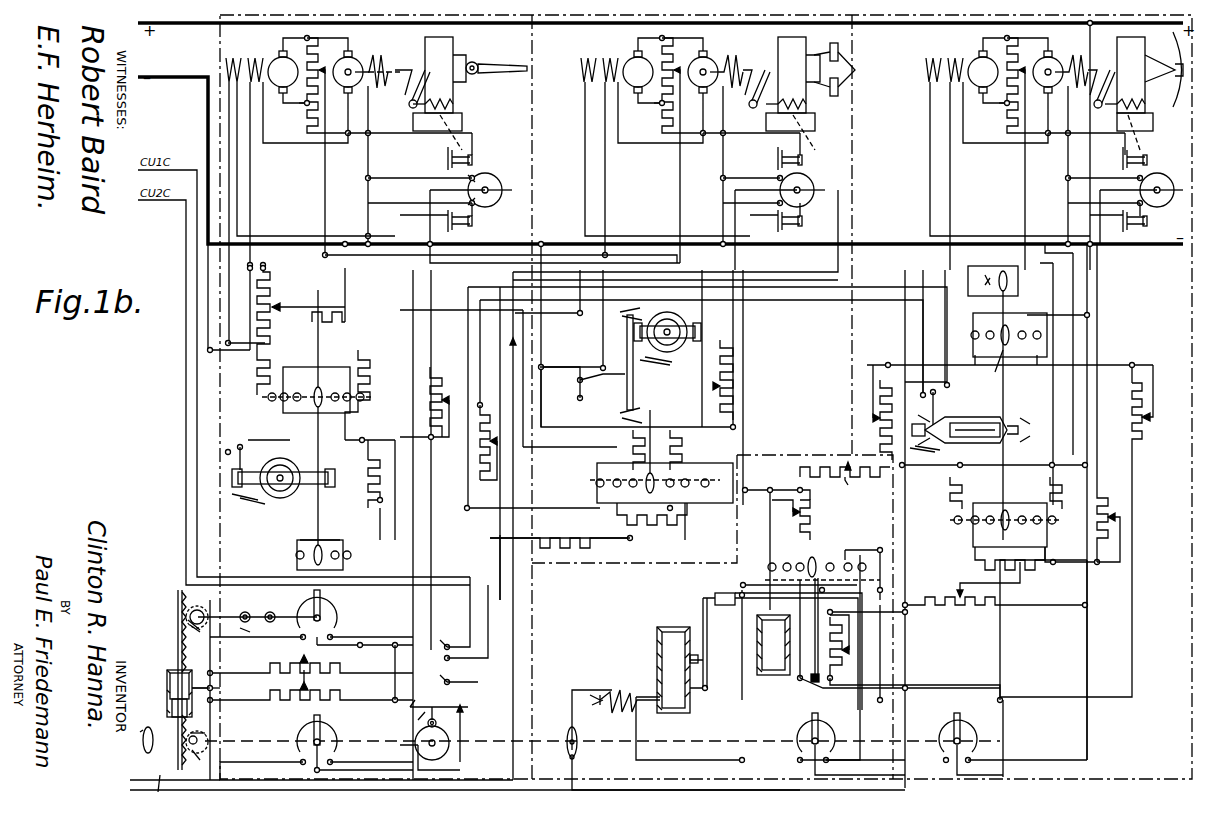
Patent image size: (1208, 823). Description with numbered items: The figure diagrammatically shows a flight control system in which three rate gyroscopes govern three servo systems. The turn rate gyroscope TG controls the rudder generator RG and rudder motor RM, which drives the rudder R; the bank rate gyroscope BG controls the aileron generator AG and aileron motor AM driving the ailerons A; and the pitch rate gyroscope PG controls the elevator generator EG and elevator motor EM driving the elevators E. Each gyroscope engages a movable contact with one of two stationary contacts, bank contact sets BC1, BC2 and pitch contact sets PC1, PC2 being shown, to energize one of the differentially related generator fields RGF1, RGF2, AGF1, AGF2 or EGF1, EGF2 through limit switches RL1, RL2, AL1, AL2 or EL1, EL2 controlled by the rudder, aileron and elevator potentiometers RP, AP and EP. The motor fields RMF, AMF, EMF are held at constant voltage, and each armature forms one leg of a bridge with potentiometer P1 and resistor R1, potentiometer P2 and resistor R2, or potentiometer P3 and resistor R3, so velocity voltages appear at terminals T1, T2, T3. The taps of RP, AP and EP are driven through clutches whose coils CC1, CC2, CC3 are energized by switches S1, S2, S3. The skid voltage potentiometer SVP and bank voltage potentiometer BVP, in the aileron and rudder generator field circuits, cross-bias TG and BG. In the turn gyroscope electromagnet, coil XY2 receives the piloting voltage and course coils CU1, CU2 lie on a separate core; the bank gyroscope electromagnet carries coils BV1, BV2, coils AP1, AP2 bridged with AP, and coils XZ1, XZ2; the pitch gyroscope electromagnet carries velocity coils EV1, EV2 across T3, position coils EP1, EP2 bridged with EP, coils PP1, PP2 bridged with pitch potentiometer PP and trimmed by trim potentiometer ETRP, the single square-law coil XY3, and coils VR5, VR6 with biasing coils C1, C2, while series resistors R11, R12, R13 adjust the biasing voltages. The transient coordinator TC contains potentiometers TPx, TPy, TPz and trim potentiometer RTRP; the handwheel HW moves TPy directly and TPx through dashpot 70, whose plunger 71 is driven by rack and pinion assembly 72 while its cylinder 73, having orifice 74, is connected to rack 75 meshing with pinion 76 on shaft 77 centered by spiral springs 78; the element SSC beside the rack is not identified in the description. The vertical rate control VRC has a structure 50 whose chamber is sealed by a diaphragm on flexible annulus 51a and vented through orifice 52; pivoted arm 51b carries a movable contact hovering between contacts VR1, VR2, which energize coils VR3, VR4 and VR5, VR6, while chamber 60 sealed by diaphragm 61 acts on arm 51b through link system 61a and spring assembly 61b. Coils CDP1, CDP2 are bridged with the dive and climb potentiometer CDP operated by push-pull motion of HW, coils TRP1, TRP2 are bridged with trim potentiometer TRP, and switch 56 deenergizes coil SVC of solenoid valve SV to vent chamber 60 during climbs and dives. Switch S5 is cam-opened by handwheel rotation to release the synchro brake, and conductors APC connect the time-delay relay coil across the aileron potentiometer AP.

The rudder generator RG is at (285, 112).
The rudder motor RM is at (348, 108).
The resistor R1 is at (306, 112).
The potentiometer P1 is at (320, 62).
The rudder motor field RMF is at (374, 142).
The rudder generator field winding RGF1 is at (311, 186).
The rudder generator field winding RGF2 is at (293, 195).
The terminals T1 is at (298, 94).
The switch S1 is at (399, 79).
The clutch coil CC1 is at (455, 103).
The rudder R is at (500, 66).
The limit switch RL1 is at (441, 219).
The limit switch RL2 is at (447, 158).
The rudder potentiometer RP is at (490, 175).
The aileron generator AG is at (640, 112).
The aileron motor AM is at (703, 108).
The resistor R2 is at (661, 112).
The potentiometer P2 is at (675, 62).
The aileron motor field AMF is at (727, 142).
The aileron generator field AGF1 is at (663, 131).
The aileron generator field AGF2 is at (514, 151).
The terminals T2 is at (653, 94).
The switch S2 is at (757, 79).
The clutch coil CC2 is at (796, 93).
The ailerons A is at (837, 69).
The limit switch AL1 is at (776, 219).
The limit switch AL2 is at (778, 158).
The aileron potentiometer AP is at (805, 175).
The elevator generator EG is at (982, 112).
The elevator motor EM is at (1048, 108).
The resistor R3 is at (1006, 112).
The potentiometer P3 is at (1020, 62).
The elevator motor field EMF is at (1072, 142).
The elevator generator field EGF1 is at (996, 131).
The elevator generator field EGF2 is at (986, 155).
The terminals T3 is at (998, 94).
The switch S3 is at (1101, 79).
The clutch coil CC3 is at (1143, 93).
The elevators E is at (1175, 44).
The limit switch EL1 is at (1129, 219).
The limit switch EL2 is at (1123, 158).
The elevator potentiometer EP is at (1163, 175).
The bank voltage potentiometer BVP is at (278, 296).
The skid voltage potentiometer SVP is at (313, 320).
The coil XY2 is at (323, 365).
The turn rate gyroscope TG is at (308, 512).
The series resistor R11 is at (378, 490).
The course control coil CU1 is at (311, 513).
The course control coil CU2 is at (338, 546).
The series resistor R13 is at (480, 466).
The bank contact set BC1 is at (567, 384).
The bank contact set BC2 is at (602, 365).
The bank rate gyroscope BG is at (698, 370).
The coil AP1 is at (620, 470).
The coil AP2 is at (685, 470).
The coil XZ1 is at (592, 494).
The coil XZ2 is at (707, 475).
The coil BV1 is at (640, 518).
The coil BV2 is at (693, 521).
The series resistor R12 is at (560, 534).
The transient coordinator TC is at (440, 619).
The coil XY3 is at (1018, 279).
The coil VR5 is at (1011, 325).
The coil VR6 is at (977, 322).
The biasing coil C1 is at (1016, 364).
The biasing coil C2 is at (963, 356).
The pitch contact set PC1 is at (923, 408).
The pitch contact set PC2 is at (962, 384).
The pitch rate gyroscope PG is at (993, 410).
The coil PP1 is at (990, 500).
The coil PP2 is at (1025, 500).
The position coil EP1 is at (958, 525).
The position coil EP2 is at (1068, 539).
The coil EV1 is at (989, 558).
The coil EV2 is at (1065, 555).
The trim potentiometer TRP is at (850, 475).
The coil TRP1 is at (777, 549).
The coil TRP2 is at (862, 548).
The coil VR3 is at (794, 530).
The coil VR4 is at (822, 561).
The coil CDP1 is at (768, 559).
The coil CDP2 is at (864, 569).
The trim potentiometer ETRP is at (990, 613).
The stationary contact VR2 is at (900, 682).
The stationary contact VR1 is at (894, 640).
The vertical rate control VRC is at (684, 584).
The pre-loaded spring assembly 61b is at (728, 582).
The chamber 60 is at (657, 637).
The diaphragm 61 is at (686, 655).
The link system 61a is at (704, 621).
The structure 50 is at (757, 640).
The pivoted arm 51b is at (775, 609).
The flexible annulus 51a is at (796, 650).
The orifice 52 is at (775, 676).
The solenoid valve SV is at (635, 682).
The solenoid valve coil SVC is at (599, 720).
The switch 56 is at (580, 737).
The switch S5 is at (445, 708).
The turn potentiometer TPx is at (345, 603).
The turn potentiometer TPz is at (300, 665).
The trim potentiometer RTRP is at (288, 698).
The turn potentiometer TPy is at (300, 727).
The rack 75 is at (175, 645).
The pinion 76 is at (203, 601).
The shaft 77 is at (228, 615).
The spiral springs 78 is at (272, 612).
The orifice 74 is at (186, 672).
The dashpot 70 is at (160, 690).
The plunger 71 is at (170, 700).
The rack and pinion assembly 72 is at (216, 733).
The dashpot cylinder 73 is at (216, 689).
The handwheel HW is at (150, 731).
The gear SSC is at (182, 745).
The conductors APC is at (165, 763).
The dive and climb potentiometer CDP is at (822, 727).
The pitch potentiometer PP is at (968, 727).